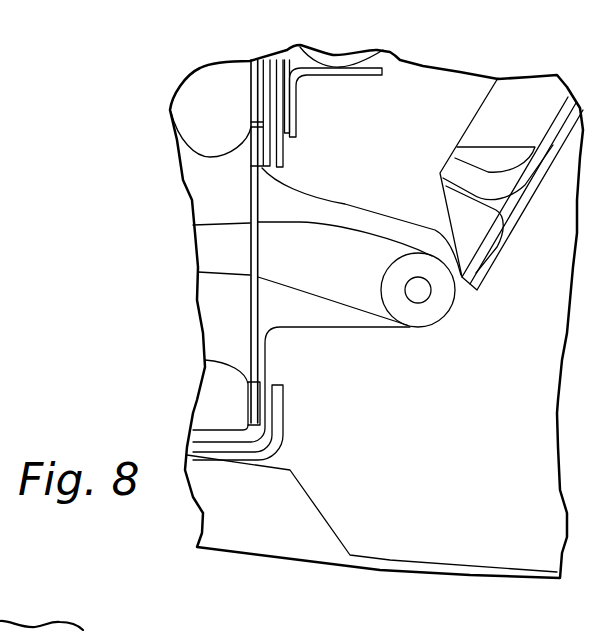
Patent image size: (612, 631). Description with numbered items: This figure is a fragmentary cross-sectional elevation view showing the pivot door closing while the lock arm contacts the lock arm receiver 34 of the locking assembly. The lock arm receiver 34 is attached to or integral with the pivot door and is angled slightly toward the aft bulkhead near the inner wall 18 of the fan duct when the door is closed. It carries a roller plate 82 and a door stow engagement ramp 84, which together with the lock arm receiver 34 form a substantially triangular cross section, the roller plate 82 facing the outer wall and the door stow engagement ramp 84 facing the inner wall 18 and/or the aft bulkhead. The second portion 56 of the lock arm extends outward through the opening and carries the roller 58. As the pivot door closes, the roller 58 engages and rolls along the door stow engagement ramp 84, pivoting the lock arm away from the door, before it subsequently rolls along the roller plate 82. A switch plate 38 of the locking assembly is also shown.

The inner wall 18 is at (262, 557).
The lock arm receiver 34 is at (481, 156).
The switch plate 38 is at (320, 283).
The second portion 56 is at (322, 212).
The roller 58 is at (435, 308).
The roller plate 82 is at (490, 145).
The door stow engagement ramp 84 is at (444, 214).